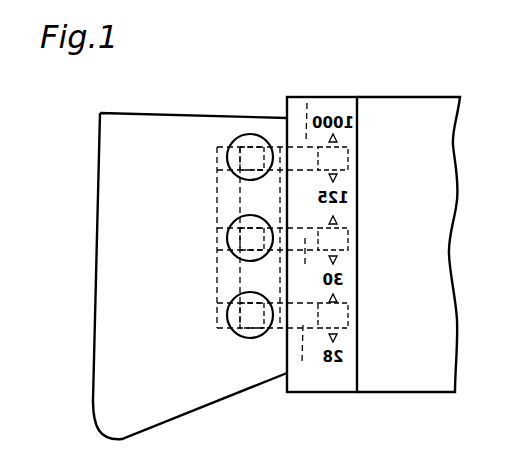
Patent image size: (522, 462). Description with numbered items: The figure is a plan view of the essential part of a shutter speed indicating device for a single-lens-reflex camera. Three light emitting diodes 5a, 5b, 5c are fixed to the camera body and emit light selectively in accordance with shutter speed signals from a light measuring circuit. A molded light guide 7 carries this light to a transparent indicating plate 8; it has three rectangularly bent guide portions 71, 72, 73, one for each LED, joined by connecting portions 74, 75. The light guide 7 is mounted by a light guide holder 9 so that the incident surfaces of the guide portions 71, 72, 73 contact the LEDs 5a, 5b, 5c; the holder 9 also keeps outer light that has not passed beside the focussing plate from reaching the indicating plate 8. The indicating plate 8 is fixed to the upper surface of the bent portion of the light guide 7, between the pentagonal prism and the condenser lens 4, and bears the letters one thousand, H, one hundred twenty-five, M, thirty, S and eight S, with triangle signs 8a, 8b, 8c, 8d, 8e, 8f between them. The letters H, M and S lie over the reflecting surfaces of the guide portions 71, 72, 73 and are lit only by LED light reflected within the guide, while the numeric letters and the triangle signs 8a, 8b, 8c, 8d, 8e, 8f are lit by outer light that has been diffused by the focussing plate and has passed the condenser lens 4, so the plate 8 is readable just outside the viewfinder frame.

The condenser lens 4 is at (414, 383).
The light emitting diode 5a is at (230, 143).
The light emitting diode 5b is at (228, 230).
The light emitting diode 5c is at (228, 312).
The light guide 7 is at (215, 213).
The light guide holder 9 is at (215, 195).
The connecting portion 74 is at (238, 179).
The connecting portion 75 is at (215, 287).
The guide portion 71 is at (309, 100).
The guide portion 72 is at (308, 266).
The guide portion 73 is at (305, 358).
The indicating plate 8 is at (327, 394).
The triangle sign 8a is at (350, 144).
The triangle sign 8b is at (350, 182).
The triangle sign 8c is at (350, 218).
The triangle sign 8d is at (350, 260).
The triangle sign 8e is at (350, 296).
The triangle sign 8f is at (350, 342).